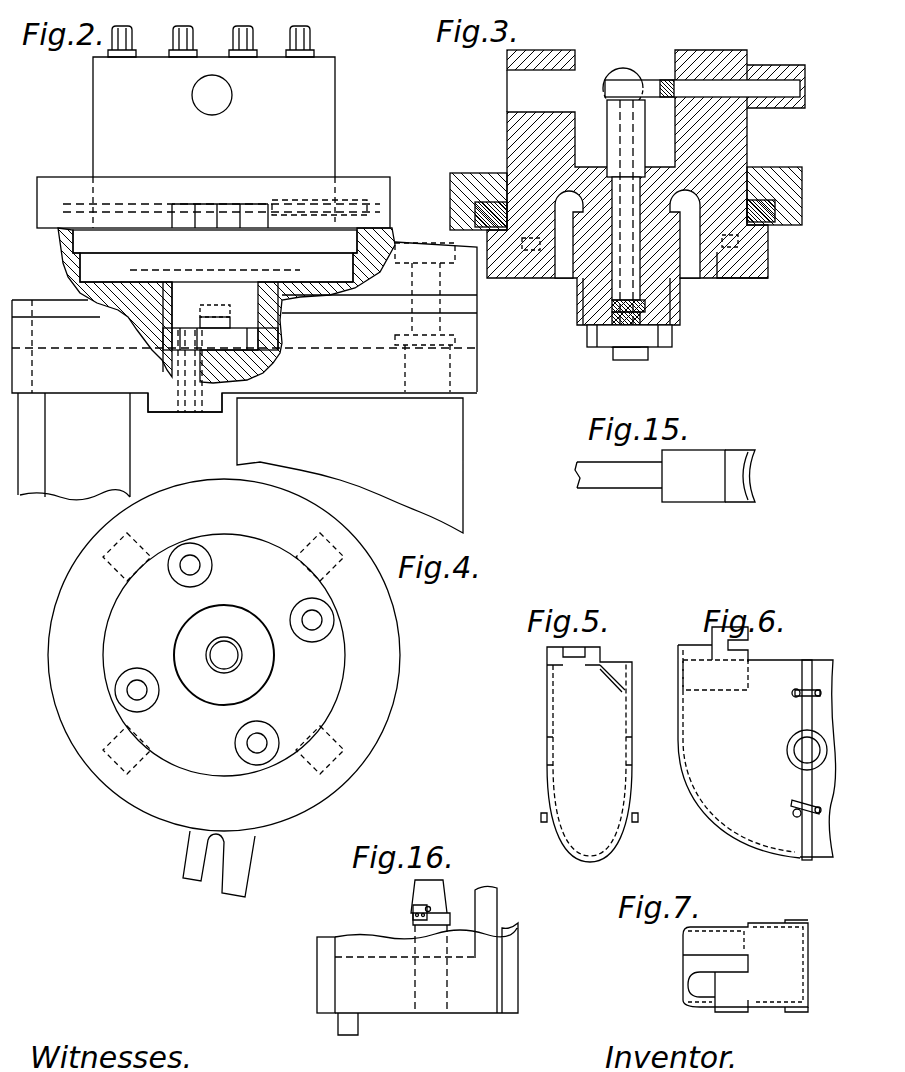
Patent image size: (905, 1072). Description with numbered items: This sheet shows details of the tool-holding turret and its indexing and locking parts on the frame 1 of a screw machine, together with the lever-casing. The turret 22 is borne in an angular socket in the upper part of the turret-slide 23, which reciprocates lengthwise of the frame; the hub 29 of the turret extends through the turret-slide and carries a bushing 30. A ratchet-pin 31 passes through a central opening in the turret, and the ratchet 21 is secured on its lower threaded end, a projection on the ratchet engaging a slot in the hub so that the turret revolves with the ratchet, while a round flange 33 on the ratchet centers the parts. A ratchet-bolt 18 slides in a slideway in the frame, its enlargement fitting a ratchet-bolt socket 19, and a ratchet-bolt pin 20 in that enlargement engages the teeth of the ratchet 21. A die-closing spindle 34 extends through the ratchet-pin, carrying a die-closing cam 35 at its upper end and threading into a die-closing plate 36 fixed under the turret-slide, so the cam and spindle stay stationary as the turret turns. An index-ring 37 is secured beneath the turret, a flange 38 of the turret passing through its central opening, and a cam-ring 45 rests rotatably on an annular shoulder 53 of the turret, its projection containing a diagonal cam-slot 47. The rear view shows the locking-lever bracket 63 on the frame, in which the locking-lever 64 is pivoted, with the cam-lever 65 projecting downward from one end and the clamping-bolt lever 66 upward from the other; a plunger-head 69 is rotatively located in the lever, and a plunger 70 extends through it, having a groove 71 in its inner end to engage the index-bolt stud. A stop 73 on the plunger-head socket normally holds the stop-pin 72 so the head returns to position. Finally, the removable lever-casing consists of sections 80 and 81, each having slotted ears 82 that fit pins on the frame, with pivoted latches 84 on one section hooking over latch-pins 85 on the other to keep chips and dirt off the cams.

In FIG. 2, the frame 1 is at (244, 371).
In FIG. 2, the ratchet-bolt 18 is at (236, 400).
In FIG. 2, the ratchet-bolt socket 19 is at (200, 412).
In FIG. 2, the ratchet-bolt pin 20 is at (162, 345).
In FIG. 2, the ratchet 21 is at (262, 350).
In FIG. 3, the ratchet 21 is at (590, 340).
In FIG. 2, the turret 22 is at (213, 142).
In FIG. 4, the turret 22 is at (224, 654).
In FIG. 3, the turret 22 is at (639, 187).
In FIG. 2, the turret-slide 23 is at (241, 294).
In FIG. 2, the hub 29 is at (205, 308).
In FIG. 3, the hub 29 is at (665, 292).
In FIG. 2, the bushing 30 is at (262, 306).
In FIG. 3, the bushing 30 is at (680, 312).
In FIG. 3, the ratchet-pin 31 is at (614, 292).
In FIG. 3, the flange 33 is at (612, 307).
In FIG. 3, the die-closing spindle 34 is at (618, 146).
In FIG. 3, the die-closing cam 35 is at (620, 85).
In FIG. 3, the die-closing plate 36 is at (639, 360).
In FIG. 2, the index-ring 37 is at (215, 256).
In FIG. 3, the index-ring 37 is at (766, 262).
In FIG. 3, the flange 38 is at (540, 282).
In FIG. 4, the cam-ring 45 is at (395, 701).
In FIG. 3, the cam-ring 45 is at (778, 213).
In FIG. 4, the cam-slot 47 is at (222, 866).
In FIG. 3, the annular shoulder 53 is at (768, 230).
In FIG. 16, the locking-lever bracket 63 is at (322, 962).
In FIG. 16, the locking-lever 64 is at (426, 968).
In FIG. 16, the cam-lever 65 is at (350, 1035).
In FIG. 16, the clamping-bolt lever 66 is at (493, 890).
In FIG. 16, the plunger-head 69 is at (440, 886).
In FIG. 15, the plunger 70 is at (688, 492).
In FIG. 15, the groove 71 is at (745, 478).
In FIG. 16, the stop-pin 72 is at (425, 908).
In FIG. 16, the stop 73 is at (412, 918).
In FIG. 5, the casing section 80 is at (580, 754).
In FIG. 6, the casing section 80 is at (748, 751).
In FIG. 7, the casing section 80 is at (745, 956).
In FIG. 6, the casing section 81 is at (824, 662).
In FIG. 6, the ears 82 is at (712, 640).
In FIG. 6, the pivoted latches 84 is at (794, 693).
In FIG. 6, the latch-pins 85 is at (794, 698).